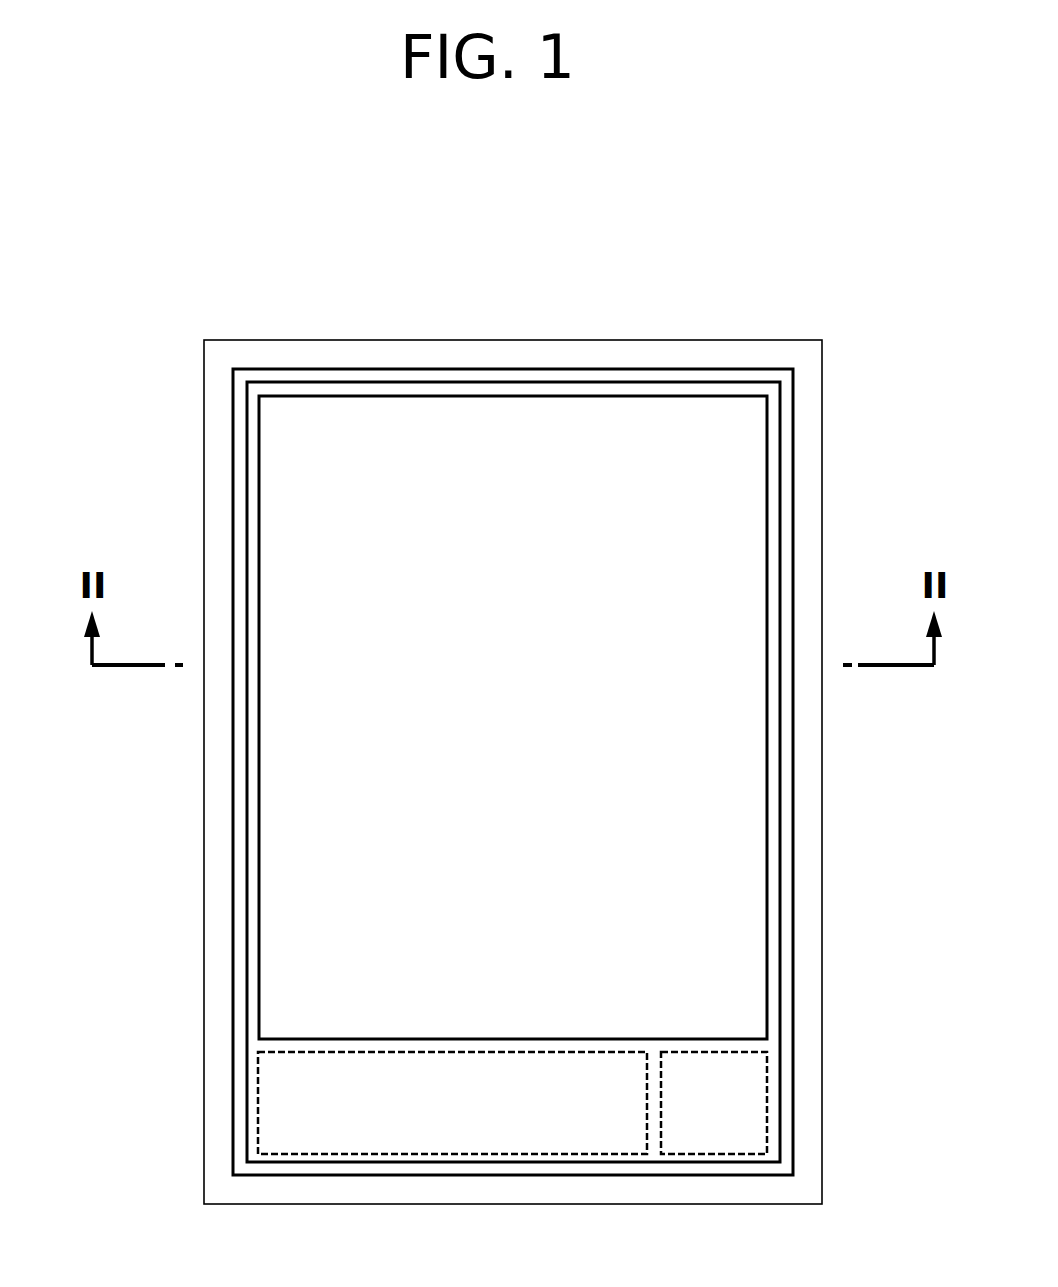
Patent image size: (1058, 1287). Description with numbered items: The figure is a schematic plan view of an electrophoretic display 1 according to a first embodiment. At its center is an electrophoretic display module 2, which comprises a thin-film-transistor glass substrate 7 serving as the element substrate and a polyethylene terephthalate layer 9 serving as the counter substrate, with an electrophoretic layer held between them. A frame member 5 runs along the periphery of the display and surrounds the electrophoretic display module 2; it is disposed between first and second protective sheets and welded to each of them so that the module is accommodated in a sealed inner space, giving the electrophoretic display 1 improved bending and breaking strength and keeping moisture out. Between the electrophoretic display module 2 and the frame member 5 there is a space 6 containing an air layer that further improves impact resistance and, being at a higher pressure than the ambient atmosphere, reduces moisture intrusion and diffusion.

The electrophoretic display 1 is at (196, 326).
The electrophoretic display module 2 is at (803, 479).
The frame member 5 is at (215, 815).
The space 6 is at (243, 946).
The thin-film-transistor glass substrate 7 is at (700, 381).
The polyethylene terephthalate layer 9 is at (534, 397).